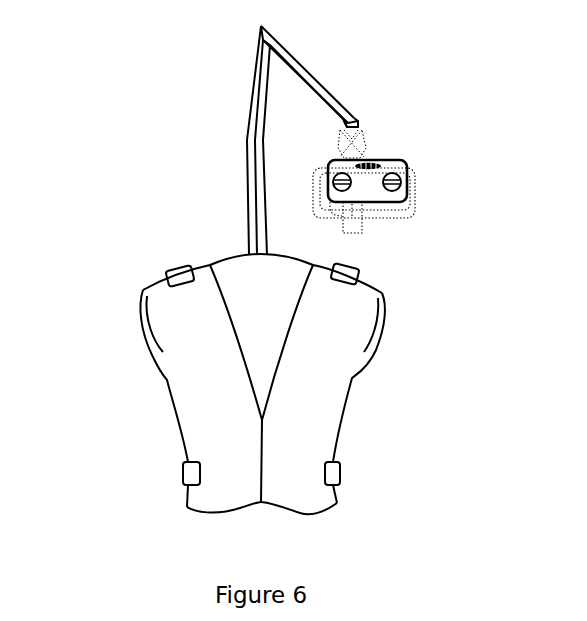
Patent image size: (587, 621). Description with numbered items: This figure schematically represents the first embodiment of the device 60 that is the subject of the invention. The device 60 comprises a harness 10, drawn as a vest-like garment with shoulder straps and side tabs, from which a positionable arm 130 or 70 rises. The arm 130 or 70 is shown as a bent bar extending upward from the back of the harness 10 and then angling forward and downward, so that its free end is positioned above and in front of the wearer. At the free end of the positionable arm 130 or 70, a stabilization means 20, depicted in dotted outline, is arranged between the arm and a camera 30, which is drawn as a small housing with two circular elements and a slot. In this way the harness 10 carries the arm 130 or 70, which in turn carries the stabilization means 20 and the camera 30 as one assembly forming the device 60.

The device 60 is at (126, 89).
The positionable arm 130 is at (305, 66).
The positionable arm 70 is at (379, 140).
The camera 30 is at (396, 168).
The stabilization means 20 is at (407, 217).
The harness 10 is at (330, 393).